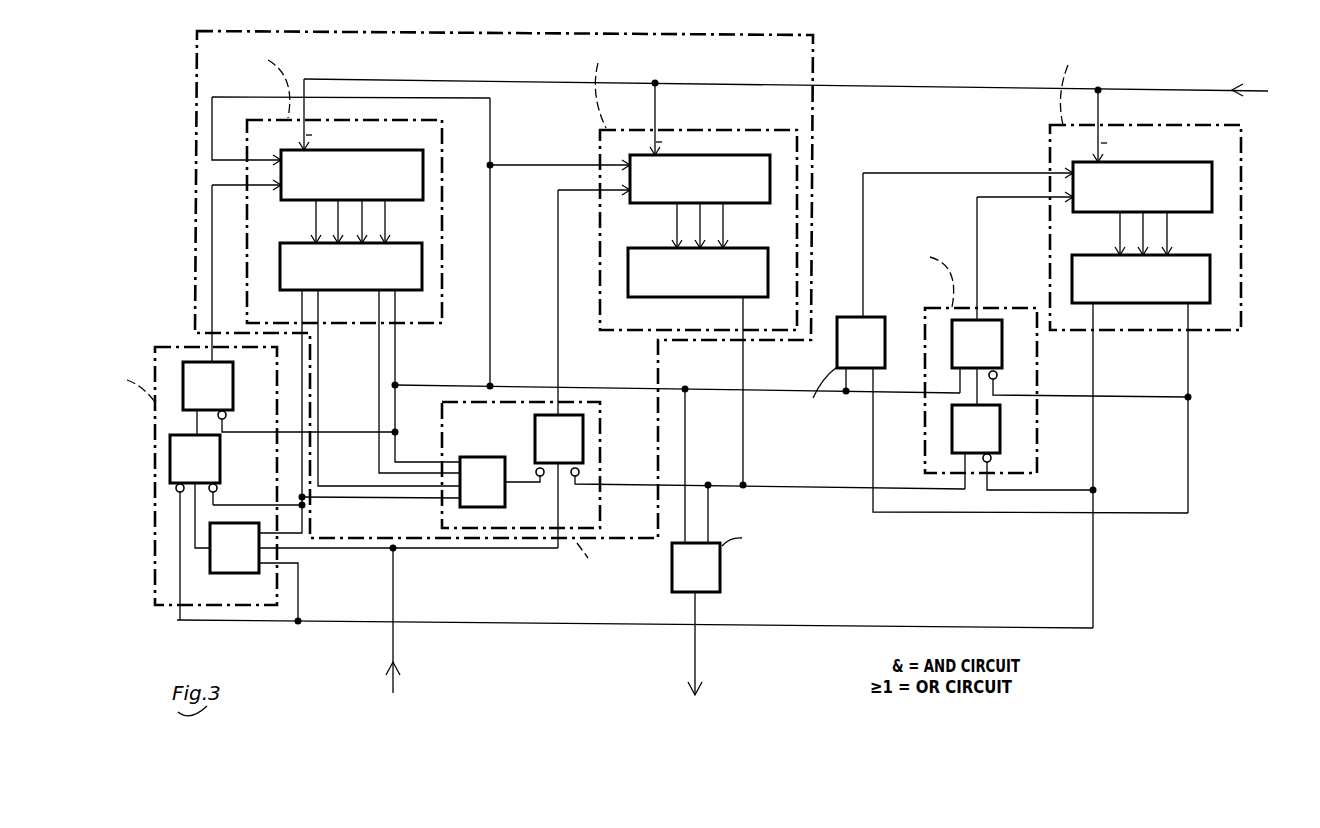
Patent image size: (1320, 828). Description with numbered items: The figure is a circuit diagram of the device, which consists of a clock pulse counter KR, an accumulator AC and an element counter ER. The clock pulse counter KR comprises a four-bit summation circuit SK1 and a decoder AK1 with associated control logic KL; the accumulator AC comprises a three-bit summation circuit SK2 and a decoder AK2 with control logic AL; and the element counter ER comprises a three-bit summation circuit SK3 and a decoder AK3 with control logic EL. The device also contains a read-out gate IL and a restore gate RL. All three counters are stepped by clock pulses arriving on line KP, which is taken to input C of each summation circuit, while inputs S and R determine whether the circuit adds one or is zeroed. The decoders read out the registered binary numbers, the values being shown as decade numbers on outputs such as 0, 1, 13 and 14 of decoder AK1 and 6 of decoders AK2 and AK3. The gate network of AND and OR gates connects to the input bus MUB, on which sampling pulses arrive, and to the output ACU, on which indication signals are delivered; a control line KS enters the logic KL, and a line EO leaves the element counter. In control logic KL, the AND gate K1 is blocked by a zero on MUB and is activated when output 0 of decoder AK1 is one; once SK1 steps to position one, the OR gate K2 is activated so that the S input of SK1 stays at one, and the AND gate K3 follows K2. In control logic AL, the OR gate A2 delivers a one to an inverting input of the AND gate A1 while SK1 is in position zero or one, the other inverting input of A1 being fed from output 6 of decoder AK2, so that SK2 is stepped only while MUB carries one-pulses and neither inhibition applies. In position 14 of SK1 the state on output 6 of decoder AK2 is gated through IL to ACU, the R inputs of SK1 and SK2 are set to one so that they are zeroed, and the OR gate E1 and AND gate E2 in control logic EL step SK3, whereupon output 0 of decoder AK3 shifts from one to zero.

The clock pulse counter KR is at (345, 118).
The clock pulse line KP is at (801, 92).
The 4-bit summation circuit SK1 is at (388, 148).
The decoder AK1 is at (396, 245).
The clock pulse counter control input KS is at (213, 294).
The control logic KL is at (168, 346).
The AND gate K1 is at (210, 553).
The OR gate K2 is at (220, 455).
The AND gate K3 is at (233, 380).
The input bus MUB is at (408, 634).
The element output line EO is at (988, 620).
The control logic AL is at (600, 521).
The AND gate A1 is at (535, 432).
The OR gate A2 is at (479, 450).
The accumulator AC is at (698, 128).
The 3-bit summation circuit SK2 is at (743, 155).
The decoder AK2 is at (744, 254).
The restore gate RL is at (837, 355).
The read-out gate IL is at (722, 567).
The output bus ACU is at (716, 682).
The control logic EL is at (953, 353).
The OR gate E1 is at (1000, 427).
The AND gate E2 is at (1002, 337).
The element counter ER is at (1175, 124).
The 3-bit summation circuit SK3 is at (1170, 157).
The decoder AK3 is at (1185, 261).
The decoder output 0 is at (302, 305).
The decoder output 1 is at (318, 305).
The decoder output 13 is at (383, 305).
The decoder output 14 is at (397, 305).
The decoder output 6 is at (747, 313).